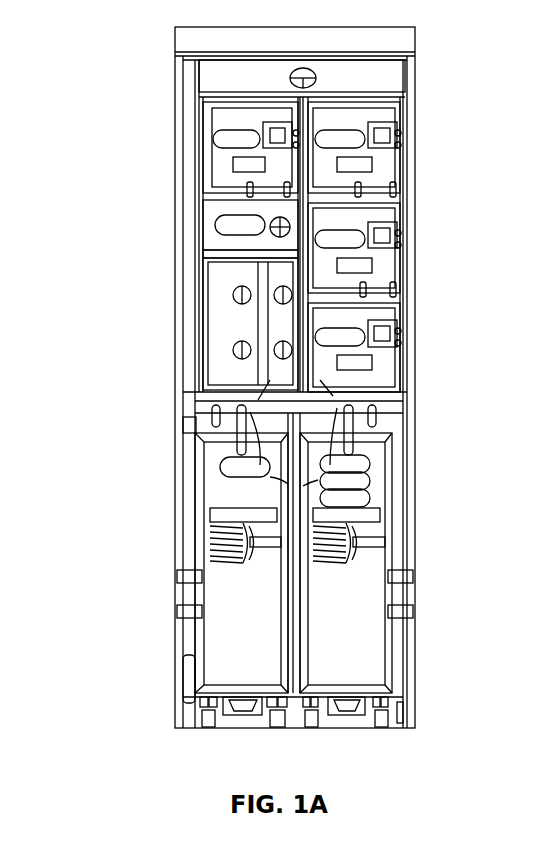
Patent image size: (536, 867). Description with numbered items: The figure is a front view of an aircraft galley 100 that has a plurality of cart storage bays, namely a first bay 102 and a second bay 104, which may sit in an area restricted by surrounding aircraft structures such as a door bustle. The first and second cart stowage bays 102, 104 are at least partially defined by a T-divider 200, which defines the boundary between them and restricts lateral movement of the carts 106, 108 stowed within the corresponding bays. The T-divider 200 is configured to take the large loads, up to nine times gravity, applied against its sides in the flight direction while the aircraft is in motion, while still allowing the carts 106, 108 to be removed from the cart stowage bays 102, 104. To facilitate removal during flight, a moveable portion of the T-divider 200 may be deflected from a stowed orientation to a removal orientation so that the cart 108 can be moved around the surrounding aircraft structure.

The galley 100 is at (108, 130).
The first bay 102 is at (116, 536).
The second bay 104 is at (446, 495).
The T-divider 200 is at (200, 432).
The cart 106 is at (218, 643).
The cart 108 is at (360, 643).